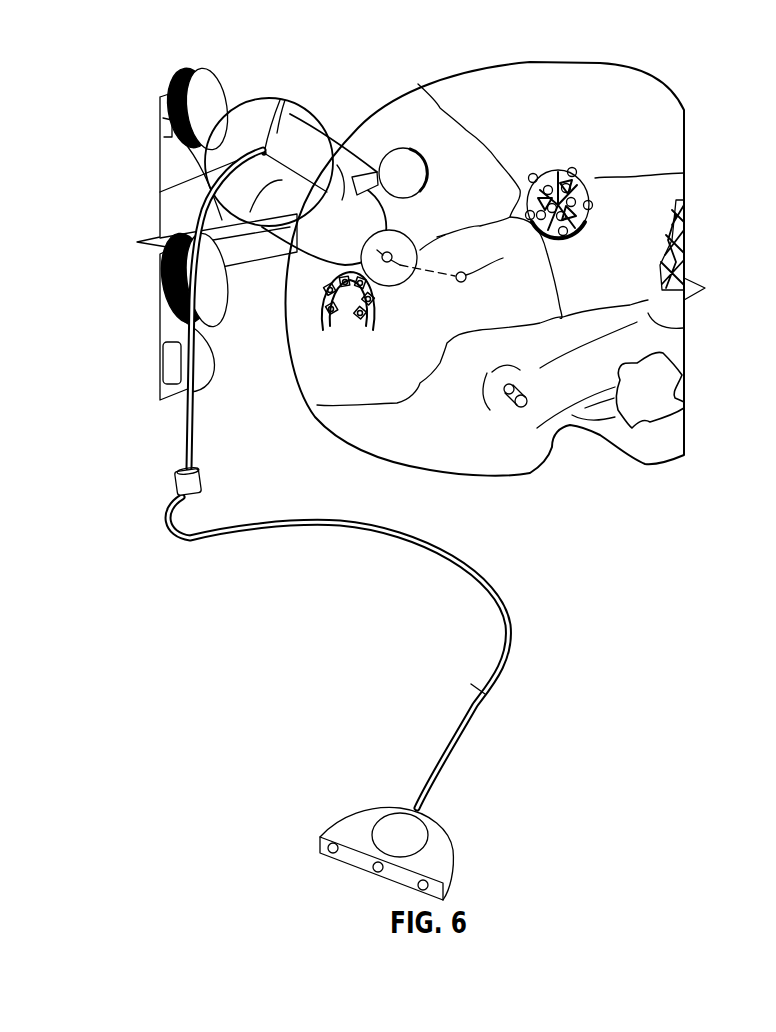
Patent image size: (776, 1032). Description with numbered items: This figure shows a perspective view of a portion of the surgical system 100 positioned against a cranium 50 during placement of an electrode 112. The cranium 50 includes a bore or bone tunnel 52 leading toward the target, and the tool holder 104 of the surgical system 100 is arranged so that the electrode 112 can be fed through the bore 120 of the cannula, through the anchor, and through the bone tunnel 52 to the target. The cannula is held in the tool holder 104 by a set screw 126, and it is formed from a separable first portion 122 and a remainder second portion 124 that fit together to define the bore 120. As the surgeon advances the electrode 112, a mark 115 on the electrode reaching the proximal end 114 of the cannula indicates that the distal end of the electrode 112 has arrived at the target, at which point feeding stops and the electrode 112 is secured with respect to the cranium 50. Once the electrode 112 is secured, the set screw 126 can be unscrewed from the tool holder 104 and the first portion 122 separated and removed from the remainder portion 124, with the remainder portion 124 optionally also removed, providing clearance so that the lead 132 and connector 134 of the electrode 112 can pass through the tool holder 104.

The cranium 50 is at (648, 100).
The surgical system 100 is at (399, 56).
The tool holder 104 is at (385, 125).
The electrode 112 is at (392, 226).
The proximal end of the cannula 114 is at (233, 237).
The mark 115 is at (222, 170).
The bore 120 is at (264, 153).
The first portion 122 is at (303, 127).
The second portion 124 is at (277, 133).
The set screw 126 is at (395, 165).
The bone tunnel 52 is at (390, 263).
The lead 132 is at (487, 573).
The connector 134 is at (438, 853).